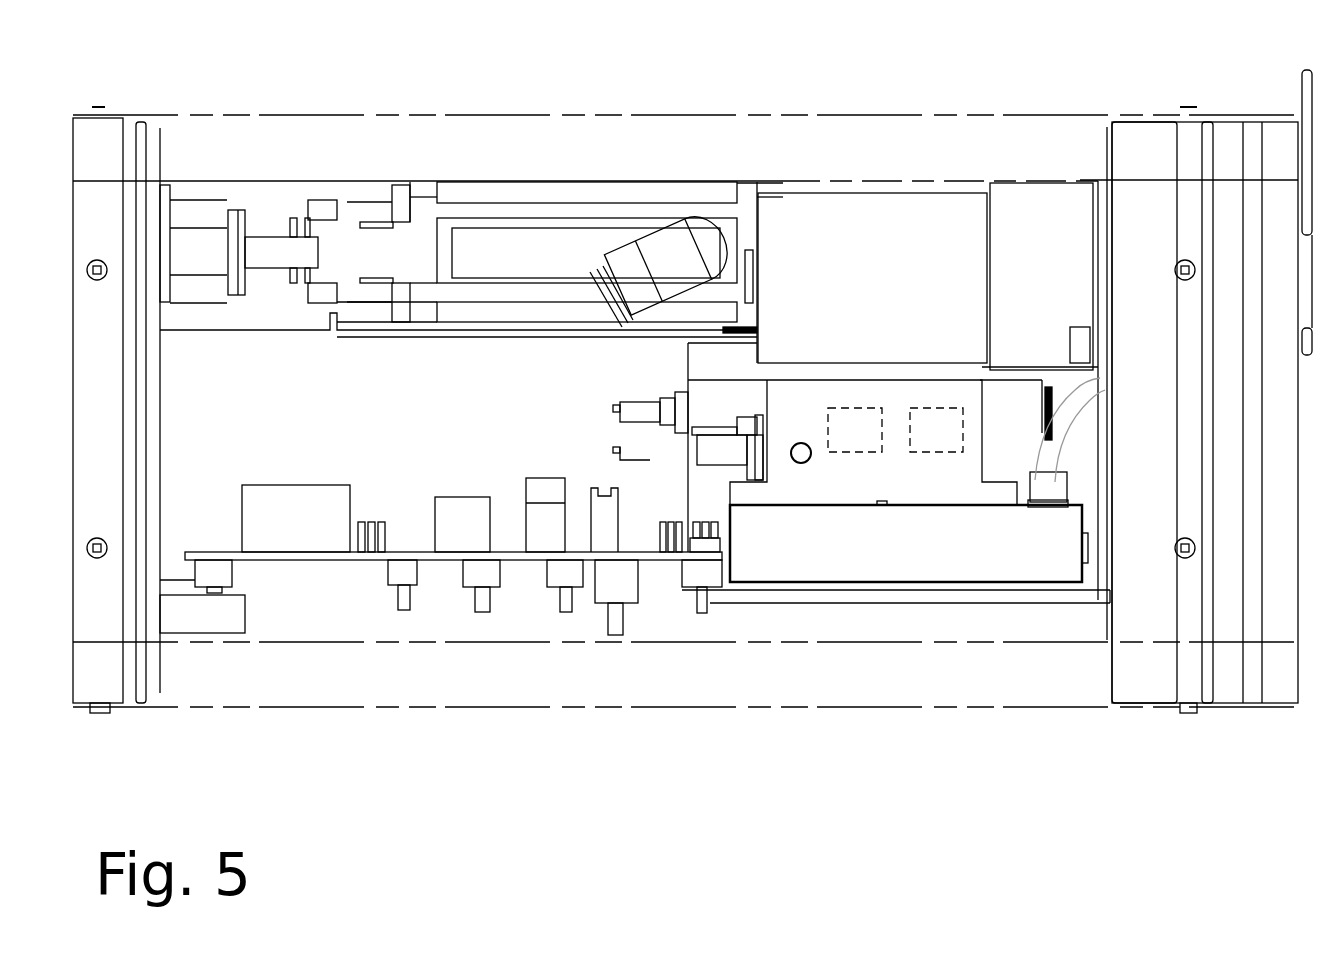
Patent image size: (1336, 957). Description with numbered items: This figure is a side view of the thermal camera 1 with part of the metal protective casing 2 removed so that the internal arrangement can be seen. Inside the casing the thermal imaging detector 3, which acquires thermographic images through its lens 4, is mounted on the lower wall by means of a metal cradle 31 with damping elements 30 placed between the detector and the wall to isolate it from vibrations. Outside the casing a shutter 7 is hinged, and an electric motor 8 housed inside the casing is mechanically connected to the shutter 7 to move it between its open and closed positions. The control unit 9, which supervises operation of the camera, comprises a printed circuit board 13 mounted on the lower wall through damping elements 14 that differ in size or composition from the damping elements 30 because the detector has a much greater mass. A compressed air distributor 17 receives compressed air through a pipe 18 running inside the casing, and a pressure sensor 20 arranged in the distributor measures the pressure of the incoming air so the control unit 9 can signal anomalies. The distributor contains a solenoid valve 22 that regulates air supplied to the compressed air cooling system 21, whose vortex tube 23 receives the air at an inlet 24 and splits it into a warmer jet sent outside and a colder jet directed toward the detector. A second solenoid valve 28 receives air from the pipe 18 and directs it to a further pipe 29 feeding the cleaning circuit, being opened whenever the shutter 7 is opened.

The thermal camera 1 is at (1208, 806).
The protective casing 2 is at (526, 785).
The thermal imaging detector 3 is at (1006, 430).
The lens 4 is at (1053, 397).
The shutter 7 is at (1302, 92).
The electric motor 8 is at (1058, 282).
The control unit 9 is at (332, 603).
The printed circuit board 13 is at (358, 558).
The damping elements 14 is at (415, 572).
The compressed air distributor 17 is at (867, 484).
The pipe 18 is at (304, 250).
The pressure sensor 20 is at (801, 443).
The compressed air cooling system 21 is at (596, 145).
The solenoid valve 22 is at (855, 430).
The vortex tube 23 is at (538, 252).
The inlet 24 is at (652, 290).
The solenoid valve 28 is at (936, 430).
The pipe 29 is at (1073, 387).
The damping elements 30 is at (615, 587).
The metal cradle 31 is at (948, 594).